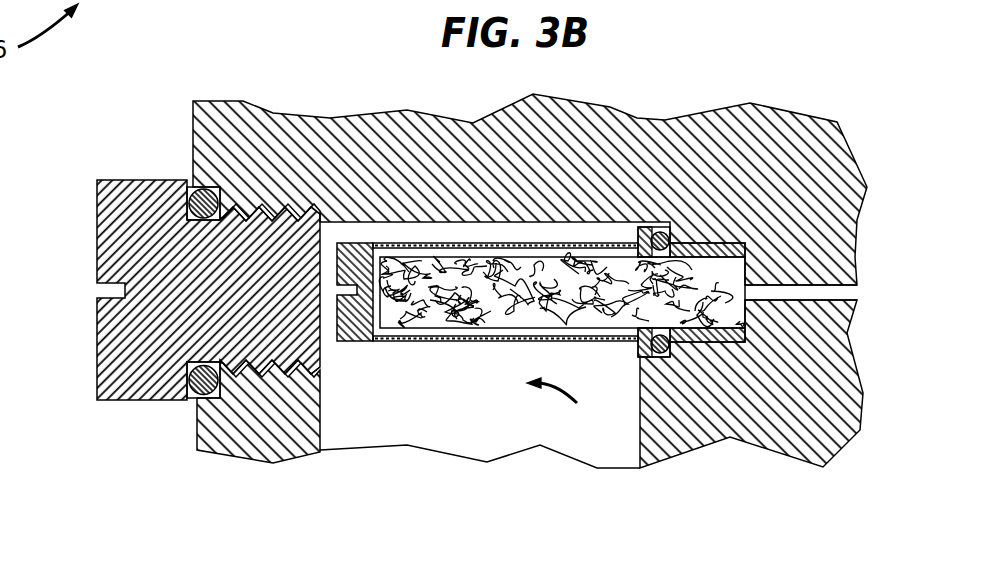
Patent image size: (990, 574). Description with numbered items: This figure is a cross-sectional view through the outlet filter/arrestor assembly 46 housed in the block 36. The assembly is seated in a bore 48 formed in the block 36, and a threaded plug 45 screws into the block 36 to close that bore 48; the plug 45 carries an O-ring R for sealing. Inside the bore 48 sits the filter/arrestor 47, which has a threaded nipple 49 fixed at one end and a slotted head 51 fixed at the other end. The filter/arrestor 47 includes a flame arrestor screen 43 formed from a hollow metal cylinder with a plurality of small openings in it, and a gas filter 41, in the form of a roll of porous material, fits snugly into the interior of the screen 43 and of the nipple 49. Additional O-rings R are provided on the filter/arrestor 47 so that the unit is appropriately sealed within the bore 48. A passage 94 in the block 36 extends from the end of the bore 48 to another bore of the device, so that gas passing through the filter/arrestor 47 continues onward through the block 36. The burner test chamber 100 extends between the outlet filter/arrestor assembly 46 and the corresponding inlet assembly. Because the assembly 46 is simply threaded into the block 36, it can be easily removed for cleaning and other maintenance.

The block 36 is at (855, 170).
The gas filter 41 is at (713, 308).
The passage 94 is at (850, 292).
The threaded plug 45 is at (97, 368).
The bore 48 is at (247, 208).
The O-rings R is at (200, 392).
The slotted head 51 is at (359, 342).
The flame arrestor screen 43 is at (432, 342).
The filter/arrestor 47 is at (500, 342).
The threaded nipple 49 is at (713, 258).
The burner test chamber 100 is at (359, 437).
The outlet filter/arrestor assembly 46 is at (564, 400).